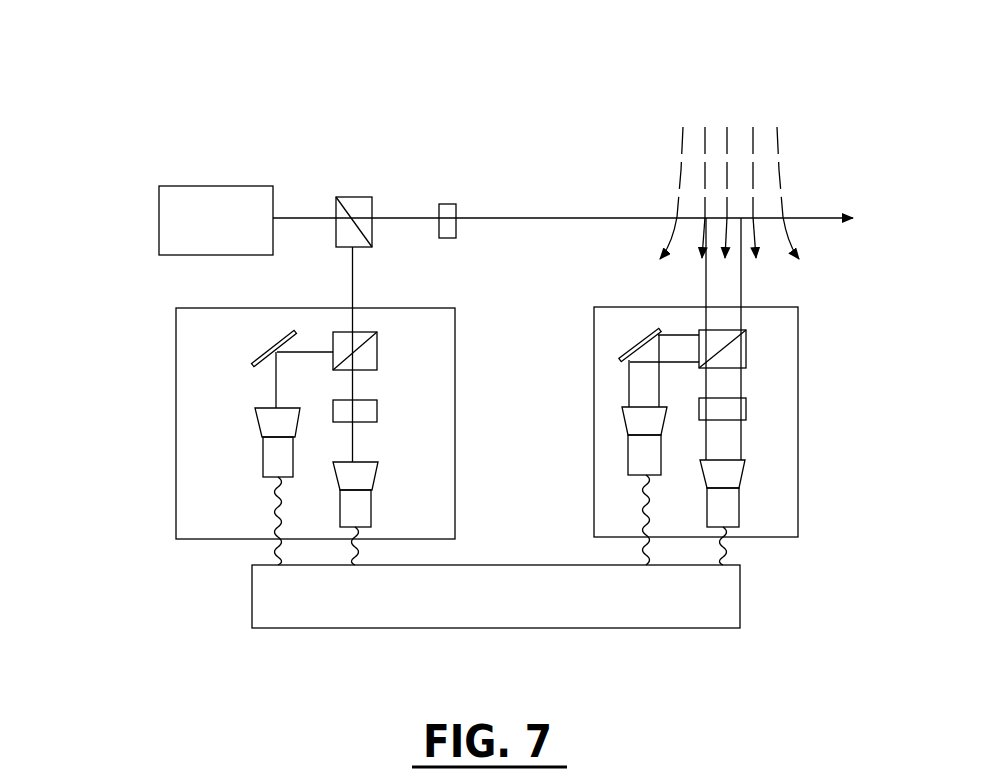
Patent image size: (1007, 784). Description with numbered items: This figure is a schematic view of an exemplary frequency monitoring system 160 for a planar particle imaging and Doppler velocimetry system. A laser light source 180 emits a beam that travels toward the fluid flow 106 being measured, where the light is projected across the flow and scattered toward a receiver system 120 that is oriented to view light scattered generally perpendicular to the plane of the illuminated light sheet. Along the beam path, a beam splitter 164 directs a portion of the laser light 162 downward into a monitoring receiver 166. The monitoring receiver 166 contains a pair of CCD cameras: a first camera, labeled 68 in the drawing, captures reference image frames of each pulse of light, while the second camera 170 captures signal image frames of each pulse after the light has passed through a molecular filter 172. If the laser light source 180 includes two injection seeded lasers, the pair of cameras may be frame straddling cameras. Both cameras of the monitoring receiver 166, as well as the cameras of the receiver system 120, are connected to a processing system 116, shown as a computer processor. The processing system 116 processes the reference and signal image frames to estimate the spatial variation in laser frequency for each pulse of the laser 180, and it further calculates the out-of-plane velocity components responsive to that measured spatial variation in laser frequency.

The laser light source 180 is at (243, 156).
The beam splitter 164 is at (353, 197).
The portion of the laser light 162 is at (353, 278).
The fluid flow 106 is at (737, 105).
The frequency monitoring system 160 is at (167, 306).
The monitoring receiver 166 is at (455, 368).
The detector 68 is at (263, 455).
The molecular filter 172 is at (368, 400).
The CCD camera 170 is at (371, 510).
The receiver system 120 is at (798, 330).
The processing system 116 is at (645, 628).